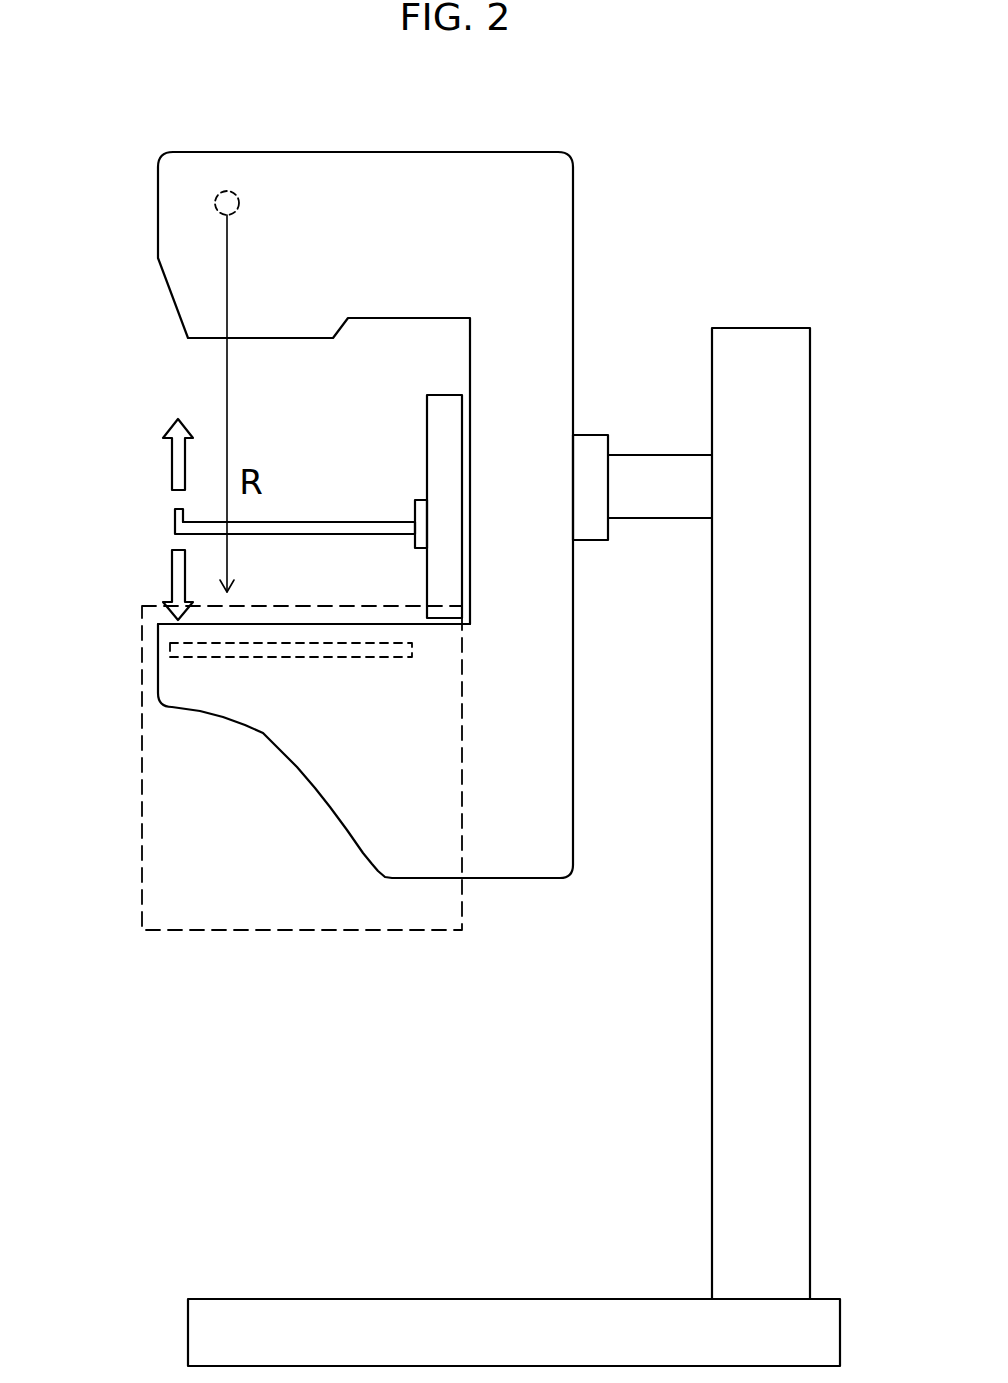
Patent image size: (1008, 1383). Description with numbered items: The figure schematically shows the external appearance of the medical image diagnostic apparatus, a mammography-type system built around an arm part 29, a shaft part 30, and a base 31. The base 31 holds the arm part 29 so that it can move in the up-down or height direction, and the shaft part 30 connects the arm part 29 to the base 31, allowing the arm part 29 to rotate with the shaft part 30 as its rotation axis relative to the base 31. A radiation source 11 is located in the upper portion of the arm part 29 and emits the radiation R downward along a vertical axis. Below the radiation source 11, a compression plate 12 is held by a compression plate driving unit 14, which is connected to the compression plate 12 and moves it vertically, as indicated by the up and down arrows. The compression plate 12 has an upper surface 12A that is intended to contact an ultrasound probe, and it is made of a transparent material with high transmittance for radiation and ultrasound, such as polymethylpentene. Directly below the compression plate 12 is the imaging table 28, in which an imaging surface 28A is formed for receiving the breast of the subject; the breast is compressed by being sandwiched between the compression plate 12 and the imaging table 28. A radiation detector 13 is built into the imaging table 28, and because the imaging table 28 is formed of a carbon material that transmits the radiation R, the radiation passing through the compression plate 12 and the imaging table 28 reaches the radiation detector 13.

The radiation source 11 is at (232, 186).
The compression plate 12 is at (180, 525).
The upper surface 12A is at (363, 522).
The radiation detector 13 is at (252, 653).
The compression plate driving unit 14 is at (415, 542).
The imaging table 28 is at (140, 740).
The imaging surface 28A is at (285, 625).
The arm part 29 is at (457, 170).
The shaft part 30 is at (663, 473).
The base 31 is at (772, 377).